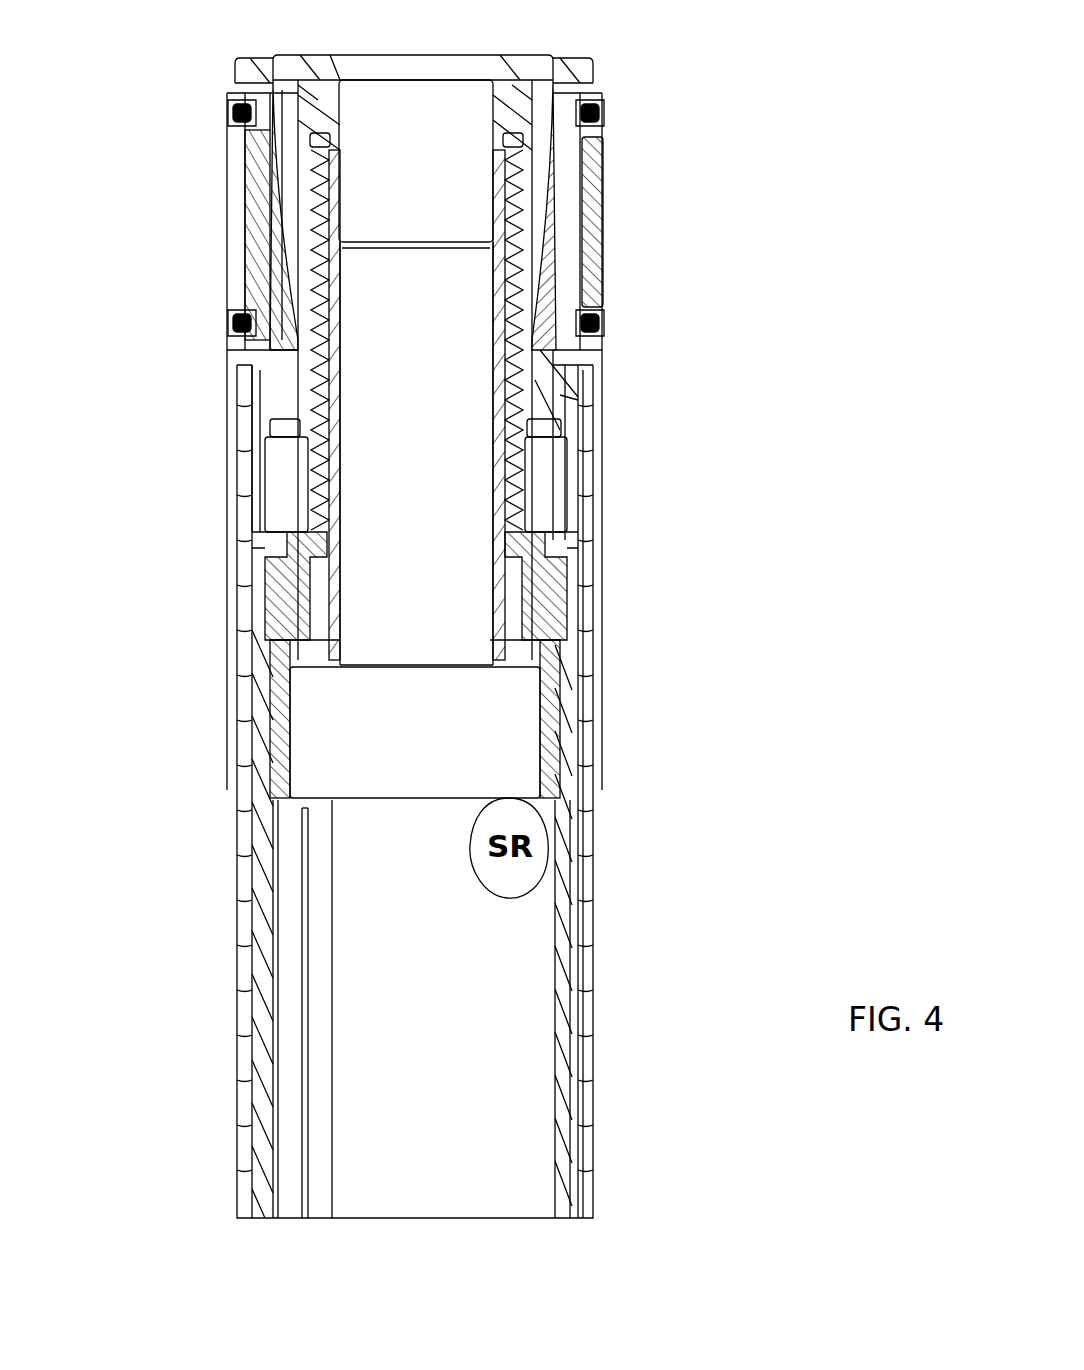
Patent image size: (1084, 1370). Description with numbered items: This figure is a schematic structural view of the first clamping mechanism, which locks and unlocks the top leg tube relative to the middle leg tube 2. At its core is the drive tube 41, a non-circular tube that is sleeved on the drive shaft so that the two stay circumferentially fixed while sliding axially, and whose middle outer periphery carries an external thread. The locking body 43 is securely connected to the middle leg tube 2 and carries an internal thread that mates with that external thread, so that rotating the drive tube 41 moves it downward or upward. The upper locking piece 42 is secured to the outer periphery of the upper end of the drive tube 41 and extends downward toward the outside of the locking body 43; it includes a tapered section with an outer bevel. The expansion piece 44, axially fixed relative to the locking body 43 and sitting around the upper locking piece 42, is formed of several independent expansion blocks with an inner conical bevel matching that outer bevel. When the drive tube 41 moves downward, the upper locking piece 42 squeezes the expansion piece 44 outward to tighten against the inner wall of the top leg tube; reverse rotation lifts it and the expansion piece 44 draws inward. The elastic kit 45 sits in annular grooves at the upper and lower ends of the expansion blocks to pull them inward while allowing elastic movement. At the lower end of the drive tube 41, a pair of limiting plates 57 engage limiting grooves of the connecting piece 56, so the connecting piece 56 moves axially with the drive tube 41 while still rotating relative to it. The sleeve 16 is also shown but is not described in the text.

The middle leg tube 2 is at (587, 520).
The sleeve 16 is at (603, 220).
The drive tube 41 is at (325, 112).
The upper locking piece 42 is at (258, 148).
The locking body 43 is at (560, 395).
The expansion piece 44 is at (262, 228).
The elastic kit 45 is at (597, 112).
The connecting piece 56 is at (273, 723).
The limiting plates 57 is at (267, 620).